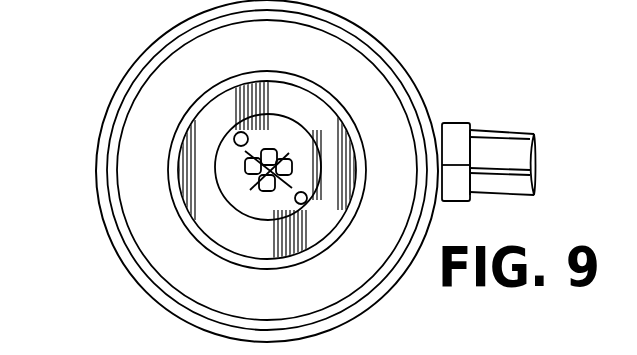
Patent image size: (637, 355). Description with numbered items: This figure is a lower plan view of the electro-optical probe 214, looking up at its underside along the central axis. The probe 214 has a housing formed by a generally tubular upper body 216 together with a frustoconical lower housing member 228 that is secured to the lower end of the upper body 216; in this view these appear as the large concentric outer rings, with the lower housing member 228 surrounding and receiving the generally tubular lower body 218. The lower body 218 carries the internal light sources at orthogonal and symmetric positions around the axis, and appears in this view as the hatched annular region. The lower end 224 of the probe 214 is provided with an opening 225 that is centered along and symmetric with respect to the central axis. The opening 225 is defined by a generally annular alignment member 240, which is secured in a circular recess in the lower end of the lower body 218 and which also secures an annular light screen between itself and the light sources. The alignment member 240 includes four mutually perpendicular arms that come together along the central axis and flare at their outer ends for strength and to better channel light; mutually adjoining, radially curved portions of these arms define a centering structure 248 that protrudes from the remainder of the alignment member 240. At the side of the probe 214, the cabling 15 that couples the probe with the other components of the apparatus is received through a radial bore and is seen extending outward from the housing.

The cabling 15 is at (492, 146).
The probe 214 is at (65, 207).
The upper body 216 is at (98, 142).
The lower housing member 228 is at (152, 236).
The lower end 224 is at (348, 222).
The lower body 218 is at (231, 236).
The annular alignment member 240 is at (236, 186).
The centering structure 248 is at (257, 144).
The opening 225 is at (236, 146).